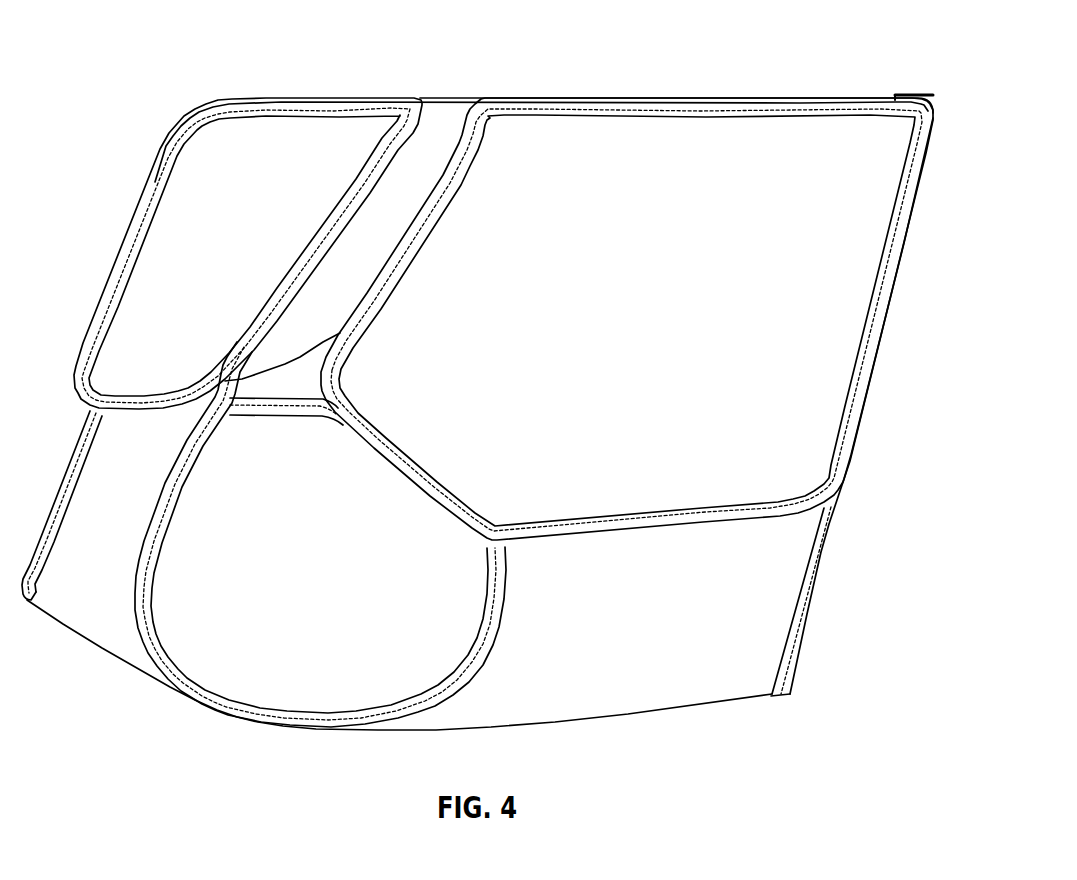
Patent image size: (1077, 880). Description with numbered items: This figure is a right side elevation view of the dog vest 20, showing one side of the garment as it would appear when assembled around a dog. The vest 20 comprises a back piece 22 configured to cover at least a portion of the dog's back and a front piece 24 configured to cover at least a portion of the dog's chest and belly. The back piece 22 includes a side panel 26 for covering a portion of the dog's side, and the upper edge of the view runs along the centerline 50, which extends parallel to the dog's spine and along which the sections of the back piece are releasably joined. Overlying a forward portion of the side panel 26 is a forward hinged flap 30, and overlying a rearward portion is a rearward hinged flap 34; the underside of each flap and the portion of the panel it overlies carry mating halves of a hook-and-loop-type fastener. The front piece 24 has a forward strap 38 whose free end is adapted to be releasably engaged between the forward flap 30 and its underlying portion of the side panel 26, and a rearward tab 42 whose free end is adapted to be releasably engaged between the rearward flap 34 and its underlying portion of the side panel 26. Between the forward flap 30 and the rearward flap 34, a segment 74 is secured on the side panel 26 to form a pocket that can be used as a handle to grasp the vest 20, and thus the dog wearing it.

The dog vest 20 is at (104, 74).
The back piece 22 is at (645, 92).
The front piece 24 is at (195, 712).
The left side panel 26 is at (538, 155).
The forward hinged flap 30 is at (240, 269).
The rearward hinged flap 34 is at (638, 336).
The left forward strap 38 is at (129, 516).
The left rearward tab 42 is at (647, 637).
The centerline 50 is at (743, 81).
The segment 74 is at (367, 270).